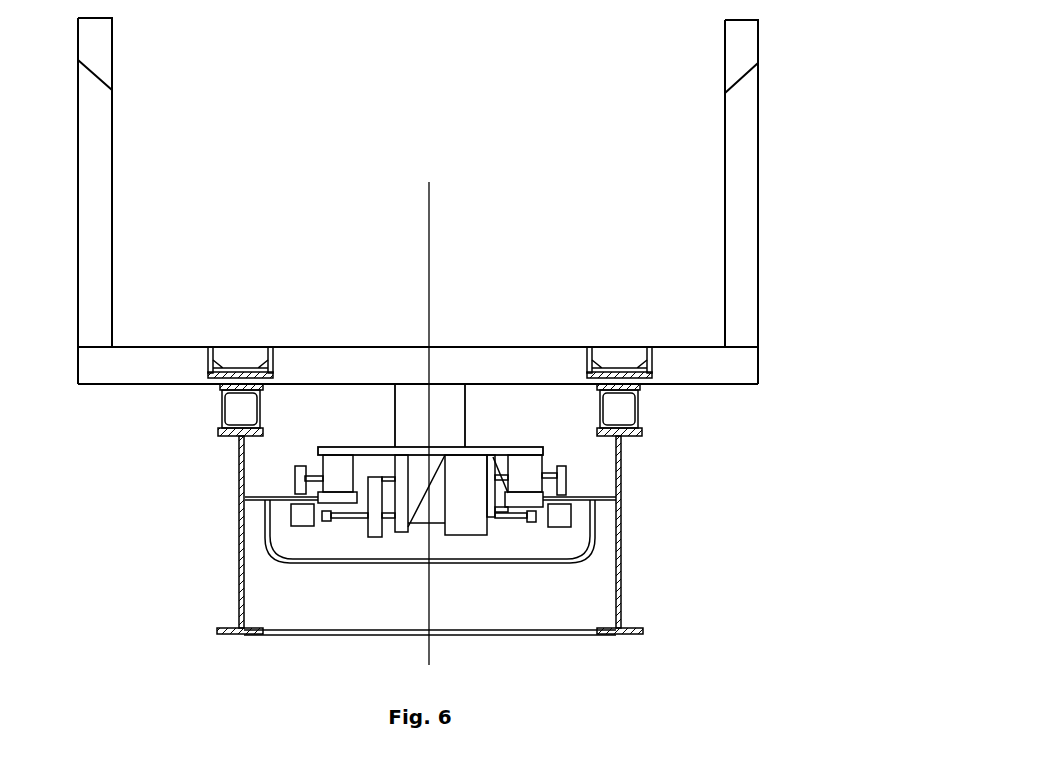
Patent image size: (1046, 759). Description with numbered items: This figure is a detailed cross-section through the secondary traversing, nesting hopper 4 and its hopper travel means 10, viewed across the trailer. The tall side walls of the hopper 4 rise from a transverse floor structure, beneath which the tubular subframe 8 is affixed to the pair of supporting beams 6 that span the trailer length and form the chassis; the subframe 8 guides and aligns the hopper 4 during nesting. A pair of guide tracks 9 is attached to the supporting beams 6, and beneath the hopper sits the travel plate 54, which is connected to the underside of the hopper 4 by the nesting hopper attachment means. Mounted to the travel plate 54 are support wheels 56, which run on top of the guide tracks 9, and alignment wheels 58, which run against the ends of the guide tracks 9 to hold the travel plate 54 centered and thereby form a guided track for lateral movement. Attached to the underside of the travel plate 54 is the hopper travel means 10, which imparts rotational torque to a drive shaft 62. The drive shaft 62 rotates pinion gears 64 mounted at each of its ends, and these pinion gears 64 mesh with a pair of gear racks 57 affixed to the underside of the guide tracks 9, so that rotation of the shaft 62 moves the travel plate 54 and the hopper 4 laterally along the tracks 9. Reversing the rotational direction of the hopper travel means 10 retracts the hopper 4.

The secondary traversing, nesting hopper 4 is at (762, 153).
The supporting beams 6 is at (218, 632).
The tubular subframe 8 is at (220, 413).
The guide tracks 9 is at (262, 497).
The hopper travel means 10 is at (486, 538).
The travel plate 54 is at (498, 445).
The support wheels 56 is at (303, 458).
The gear racks 57 is at (290, 505).
The alignment wheels 58 is at (325, 518).
The drive shaft 62 is at (360, 523).
The pinion gears 64 is at (293, 528).